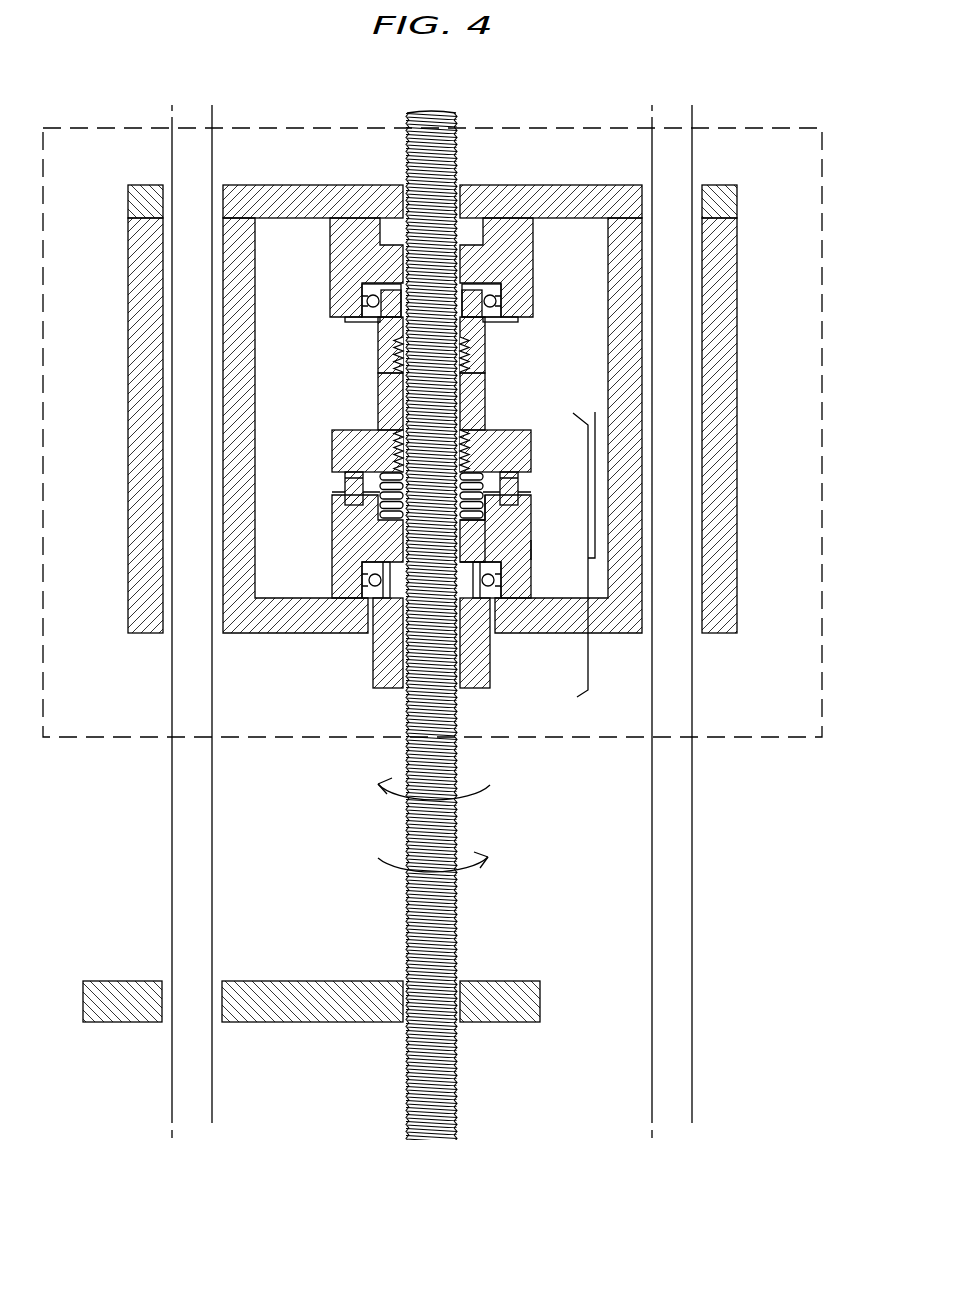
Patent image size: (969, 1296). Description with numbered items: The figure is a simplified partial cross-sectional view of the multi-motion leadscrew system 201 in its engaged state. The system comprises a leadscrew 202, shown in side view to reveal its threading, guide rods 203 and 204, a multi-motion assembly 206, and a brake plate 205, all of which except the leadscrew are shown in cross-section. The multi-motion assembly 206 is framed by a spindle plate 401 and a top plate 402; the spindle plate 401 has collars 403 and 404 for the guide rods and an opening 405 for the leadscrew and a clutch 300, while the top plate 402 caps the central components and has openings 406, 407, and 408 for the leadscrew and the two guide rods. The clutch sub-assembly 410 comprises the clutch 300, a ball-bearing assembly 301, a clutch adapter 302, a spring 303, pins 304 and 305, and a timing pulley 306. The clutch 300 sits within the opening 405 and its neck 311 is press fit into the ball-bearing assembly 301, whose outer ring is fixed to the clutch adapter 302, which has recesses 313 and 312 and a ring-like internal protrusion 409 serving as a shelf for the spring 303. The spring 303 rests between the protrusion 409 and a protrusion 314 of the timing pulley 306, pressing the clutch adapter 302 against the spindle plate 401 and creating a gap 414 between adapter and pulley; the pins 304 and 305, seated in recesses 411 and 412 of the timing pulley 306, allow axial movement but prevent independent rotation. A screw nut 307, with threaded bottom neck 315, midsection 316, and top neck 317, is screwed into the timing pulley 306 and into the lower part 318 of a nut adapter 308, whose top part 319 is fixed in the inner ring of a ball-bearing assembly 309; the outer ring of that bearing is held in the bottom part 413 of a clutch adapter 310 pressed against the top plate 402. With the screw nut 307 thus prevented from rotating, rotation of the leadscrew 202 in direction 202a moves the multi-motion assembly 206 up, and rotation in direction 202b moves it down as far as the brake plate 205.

The multi-motion leadscrew system 201 is at (450, 76).
The leadscrew 202 is at (458, 1078).
The direction 202a is at (498, 862).
The direction 202b is at (500, 790).
The guide rod 203 is at (212, 1077).
The guide rod 204 is at (692, 1077).
The brake plate 205 is at (355, 1024).
The multi-motion assembly 206 is at (752, 128).
The clutch 300 is at (490, 680).
The ball-bearing assembly 301 is at (505, 582).
The clutch adapter 302 is at (538, 550).
The spring 303 is at (485, 525).
The pin 304 is at (520, 490).
The pin 305 is at (345, 490).
The timing pulley 306 is at (533, 440).
The screw nut 307 is at (488, 405).
The nut adapter 308 is at (488, 355).
The ball-bearing assembly 309 is at (512, 320).
The clutch adapter 310 is at (535, 265).
The neck 311 is at (403, 562).
The recess 312 is at (533, 515).
The recess 313 is at (340, 505).
The protrusion 314 is at (482, 443).
The threaded bottom neck 315 is at (390, 440).
The midsection 316 is at (378, 408).
The top neck 317 is at (390, 360).
The lower part 318 is at (382, 345).
The top part 319 is at (390, 298).
The spindle plate 401 is at (257, 635).
The top plate 402 is at (557, 185).
The collar 403 is at (127, 422).
The collar 404 is at (737, 428).
The opening 405 is at (495, 635).
The opening 406 is at (458, 180).
The opening 407 is at (165, 180).
The opening 408 is at (700, 180).
The internal protrusion 409 is at (463, 540).
The clutch sub-assembly 410 is at (592, 470).
The recess 411 is at (517, 470).
The recess 412 is at (350, 472).
The bottom part 413 is at (345, 320).
The gap 414 is at (533, 500).